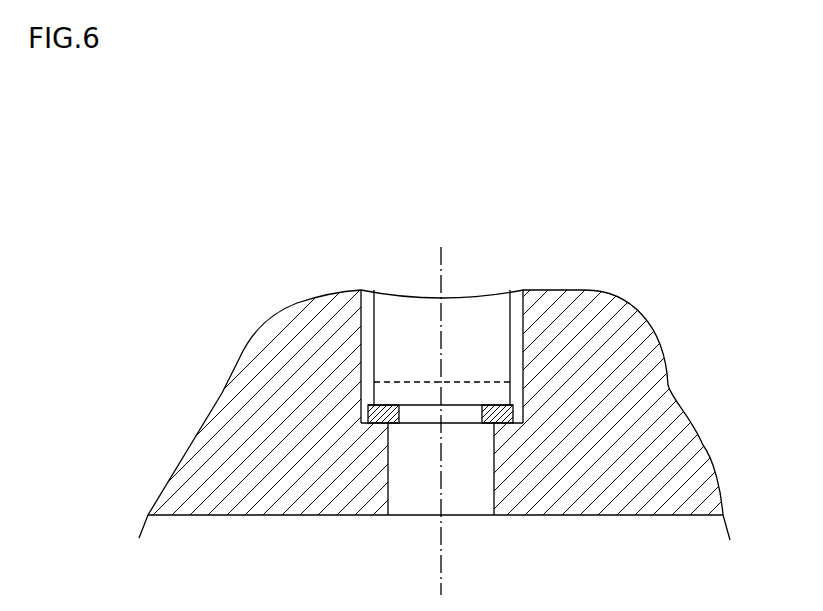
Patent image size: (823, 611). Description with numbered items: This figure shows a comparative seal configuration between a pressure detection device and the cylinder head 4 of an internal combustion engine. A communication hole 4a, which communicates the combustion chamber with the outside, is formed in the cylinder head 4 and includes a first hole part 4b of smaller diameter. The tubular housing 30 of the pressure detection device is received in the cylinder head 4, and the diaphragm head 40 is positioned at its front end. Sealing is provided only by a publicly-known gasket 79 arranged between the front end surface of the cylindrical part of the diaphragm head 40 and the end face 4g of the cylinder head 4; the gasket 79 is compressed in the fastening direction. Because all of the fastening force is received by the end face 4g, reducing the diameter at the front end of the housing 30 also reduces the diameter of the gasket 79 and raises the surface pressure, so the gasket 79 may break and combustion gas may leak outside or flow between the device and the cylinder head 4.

The cylinder head 4 is at (255, 515).
The communication hole 4a is at (494, 487).
The first hole part 4b is at (361, 327).
The end face 4g is at (393, 405).
The housing 30 is at (537, 307).
The diaphragm head 40 is at (510, 393).
The gasket 79 is at (393, 425).